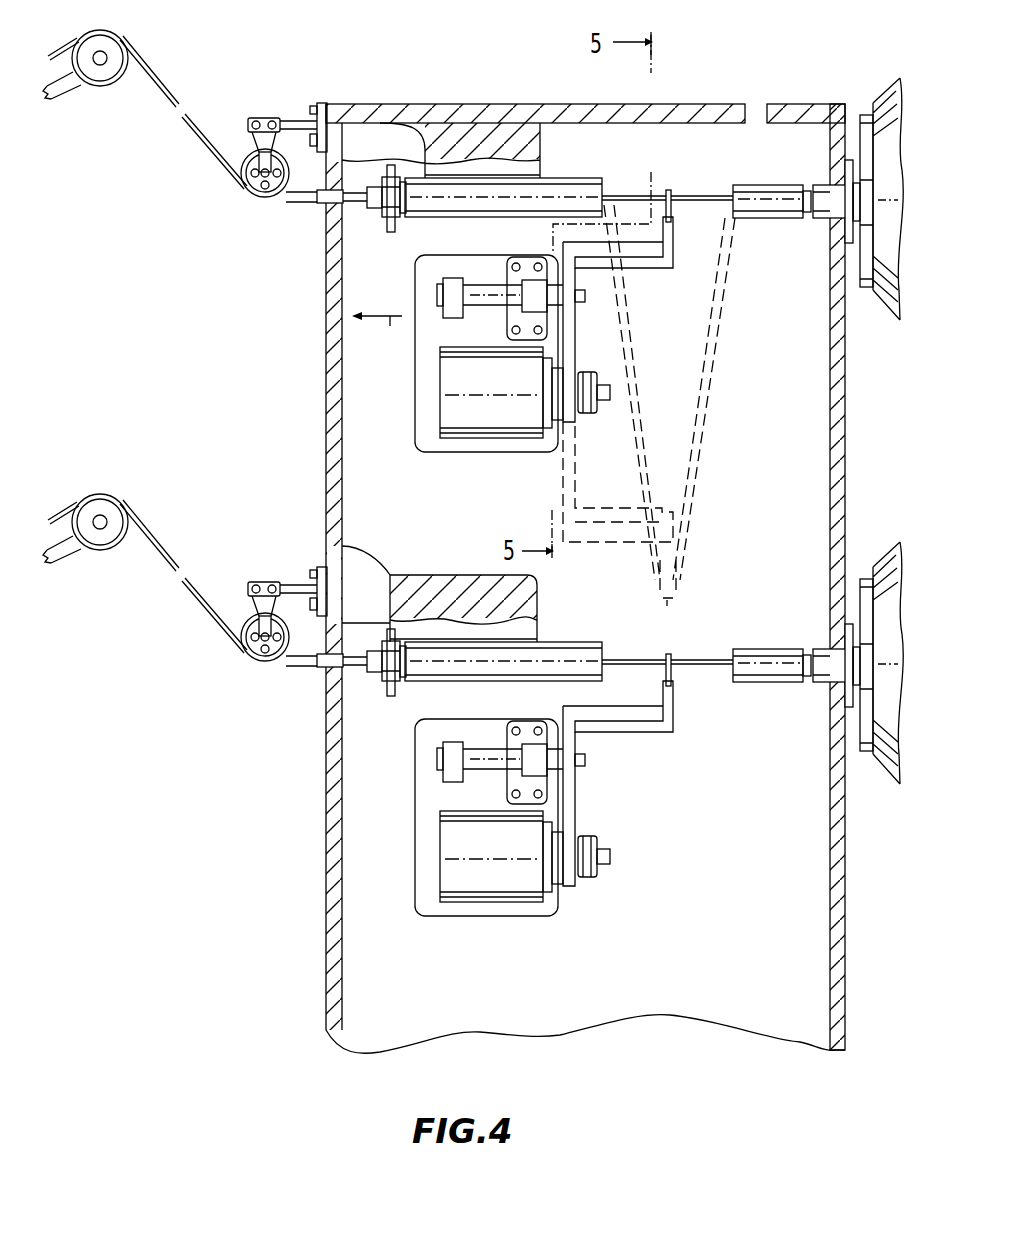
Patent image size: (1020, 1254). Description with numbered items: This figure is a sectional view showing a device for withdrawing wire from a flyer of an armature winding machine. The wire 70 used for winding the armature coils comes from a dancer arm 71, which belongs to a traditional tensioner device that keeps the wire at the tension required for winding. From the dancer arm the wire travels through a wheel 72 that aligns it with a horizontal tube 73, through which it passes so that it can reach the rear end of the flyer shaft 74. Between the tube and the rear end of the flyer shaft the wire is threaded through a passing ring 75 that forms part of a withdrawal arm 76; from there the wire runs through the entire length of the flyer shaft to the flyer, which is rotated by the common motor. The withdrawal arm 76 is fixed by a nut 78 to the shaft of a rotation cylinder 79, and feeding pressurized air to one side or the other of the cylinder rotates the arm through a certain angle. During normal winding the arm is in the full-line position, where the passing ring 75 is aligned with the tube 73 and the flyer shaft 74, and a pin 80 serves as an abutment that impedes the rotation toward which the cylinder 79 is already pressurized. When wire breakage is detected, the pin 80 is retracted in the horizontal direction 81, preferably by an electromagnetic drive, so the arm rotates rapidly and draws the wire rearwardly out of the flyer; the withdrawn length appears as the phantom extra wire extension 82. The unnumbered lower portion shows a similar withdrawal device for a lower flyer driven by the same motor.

The wire 70 is at (157, 77).
The dancer arm 71 is at (68, 84).
The wheel 72 is at (247, 190).
The horizontal tube 73 is at (552, 188).
The flyer shaft 74 is at (775, 212).
The passing ring 75 is at (672, 190).
The withdrawal arm 76 is at (650, 268).
The nut 78 is at (585, 413).
The rotation cylinder 79 is at (493, 408).
The pin 80 is at (577, 298).
The horizontal direction 81 is at (377, 336).
The extra wire extension 82 is at (713, 347).